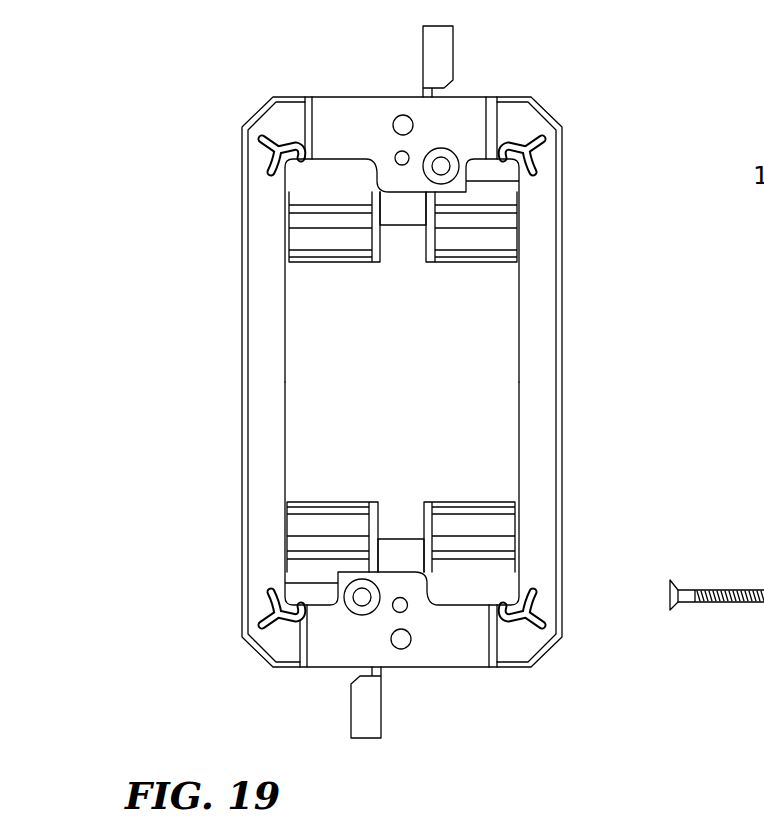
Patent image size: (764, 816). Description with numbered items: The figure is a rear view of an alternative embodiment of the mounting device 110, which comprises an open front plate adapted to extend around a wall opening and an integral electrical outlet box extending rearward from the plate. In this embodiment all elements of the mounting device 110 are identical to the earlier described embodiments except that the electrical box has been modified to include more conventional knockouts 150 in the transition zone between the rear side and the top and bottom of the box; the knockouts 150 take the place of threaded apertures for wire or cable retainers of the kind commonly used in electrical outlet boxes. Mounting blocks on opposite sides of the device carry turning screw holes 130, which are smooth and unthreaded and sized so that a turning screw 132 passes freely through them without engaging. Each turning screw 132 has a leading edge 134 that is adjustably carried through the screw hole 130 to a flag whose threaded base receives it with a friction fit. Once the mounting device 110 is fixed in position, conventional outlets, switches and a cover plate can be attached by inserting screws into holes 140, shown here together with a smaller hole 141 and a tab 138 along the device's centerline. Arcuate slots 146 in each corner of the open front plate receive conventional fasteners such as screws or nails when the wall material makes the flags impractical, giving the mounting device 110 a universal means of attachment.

The mounting device 110 is at (578, 683).
The turning screw hole 130 is at (443, 165).
The turning screw 132 is at (750, 604).
The leading edge 134 is at (714, 575).
The mounting tab 138 is at (449, 36).
The hole 140 is at (403, 115).
The hole 141 is at (394, 157).
The slot 146 is at (262, 138).
The knockout 150 is at (303, 223).